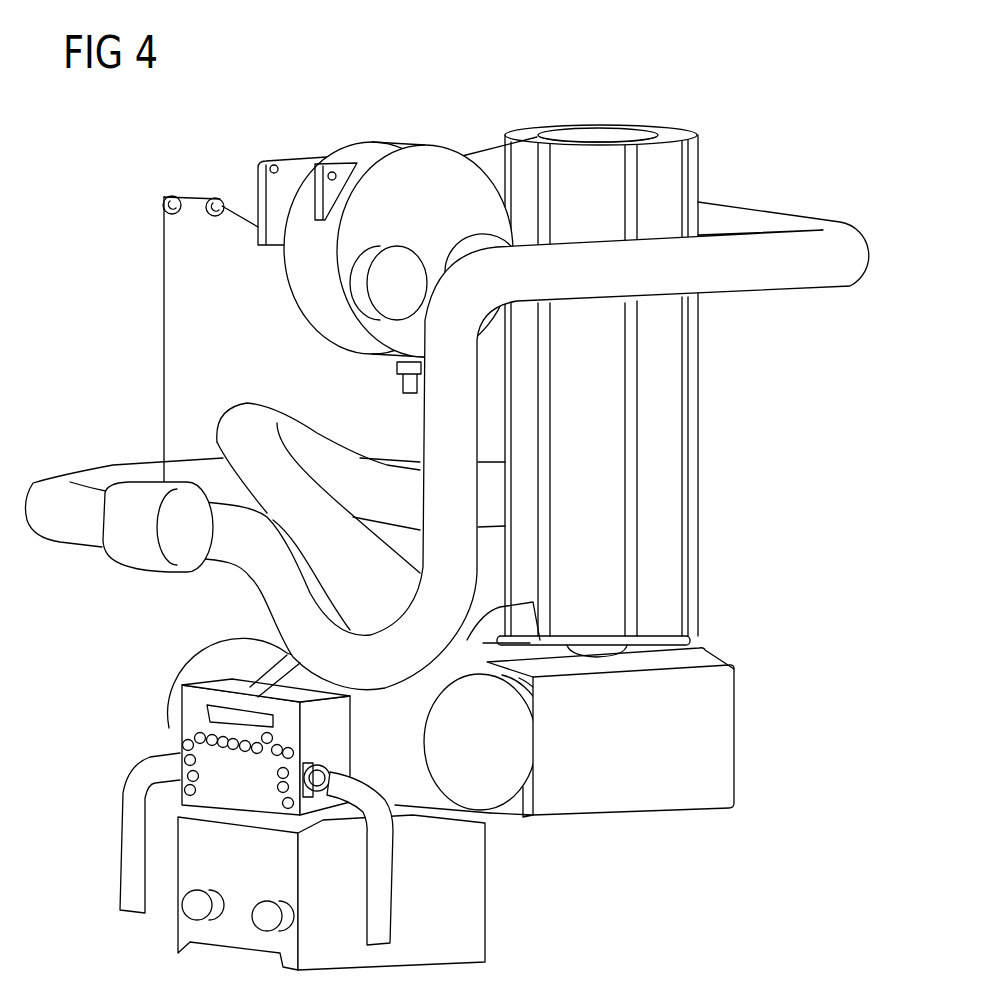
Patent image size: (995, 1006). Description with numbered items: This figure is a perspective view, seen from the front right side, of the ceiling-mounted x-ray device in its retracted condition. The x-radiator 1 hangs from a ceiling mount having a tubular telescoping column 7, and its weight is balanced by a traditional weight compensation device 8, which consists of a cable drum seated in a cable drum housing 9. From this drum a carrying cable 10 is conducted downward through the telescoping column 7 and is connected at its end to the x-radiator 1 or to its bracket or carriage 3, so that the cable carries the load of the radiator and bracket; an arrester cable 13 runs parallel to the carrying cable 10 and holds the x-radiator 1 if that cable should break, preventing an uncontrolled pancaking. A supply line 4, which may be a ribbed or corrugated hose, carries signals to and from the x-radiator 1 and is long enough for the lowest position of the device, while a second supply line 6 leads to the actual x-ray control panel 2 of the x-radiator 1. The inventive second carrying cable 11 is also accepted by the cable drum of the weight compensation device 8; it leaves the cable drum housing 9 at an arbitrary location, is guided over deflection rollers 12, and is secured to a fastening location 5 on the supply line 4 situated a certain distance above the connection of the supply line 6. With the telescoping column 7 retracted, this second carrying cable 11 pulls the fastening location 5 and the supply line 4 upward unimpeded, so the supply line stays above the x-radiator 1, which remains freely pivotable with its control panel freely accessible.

The x-radiator 1 is at (480, 780).
The x-ray control panel 2 is at (192, 710).
The bracket or carriage 3 is at (705, 737).
The supply line 4 is at (793, 263).
The fastening location 5 is at (160, 493).
The second supply line 6 is at (472, 640).
The telescoping column 7 is at (667, 407).
The weight compensation device 8 is at (333, 131).
The cable drum housing 9 is at (297, 306).
The carrying cable 10 is at (492, 137).
The second carrying cable 11 is at (160, 352).
The deflection rollers 12 is at (223, 215).
The arrester cable 13 is at (472, 150).